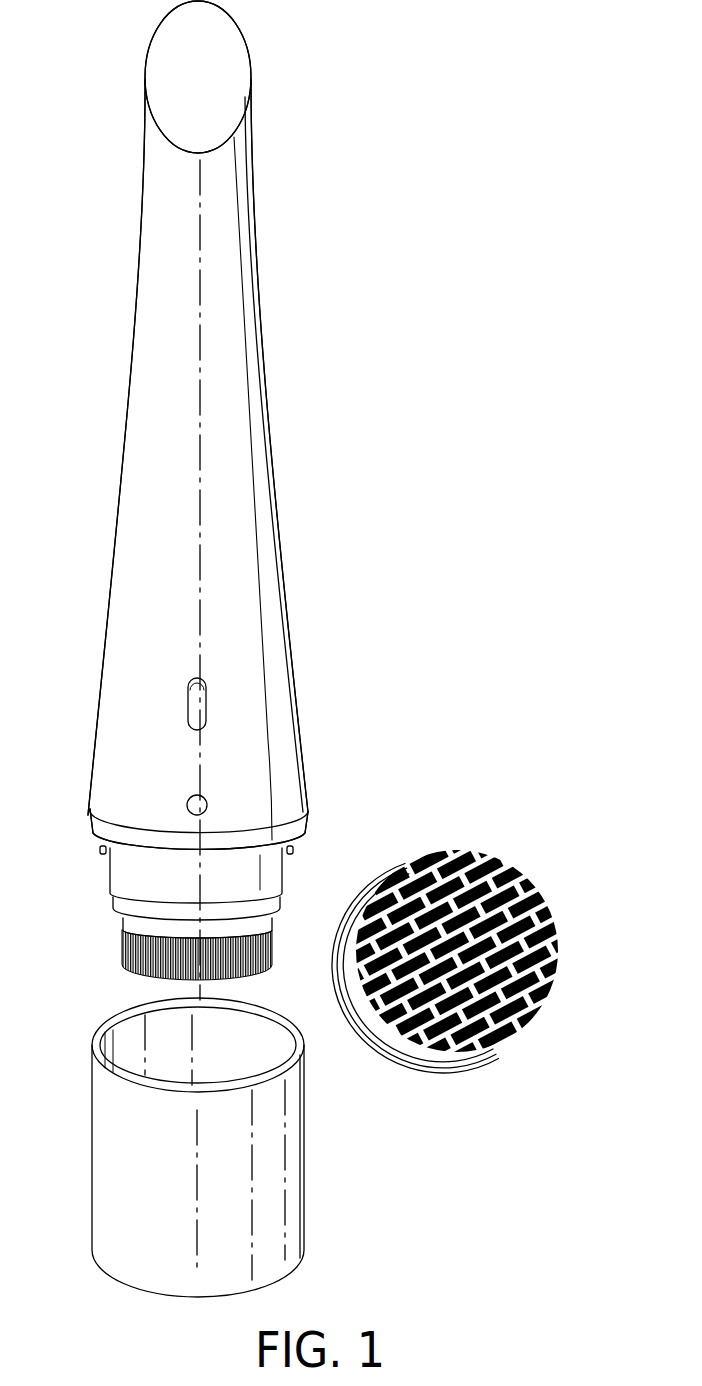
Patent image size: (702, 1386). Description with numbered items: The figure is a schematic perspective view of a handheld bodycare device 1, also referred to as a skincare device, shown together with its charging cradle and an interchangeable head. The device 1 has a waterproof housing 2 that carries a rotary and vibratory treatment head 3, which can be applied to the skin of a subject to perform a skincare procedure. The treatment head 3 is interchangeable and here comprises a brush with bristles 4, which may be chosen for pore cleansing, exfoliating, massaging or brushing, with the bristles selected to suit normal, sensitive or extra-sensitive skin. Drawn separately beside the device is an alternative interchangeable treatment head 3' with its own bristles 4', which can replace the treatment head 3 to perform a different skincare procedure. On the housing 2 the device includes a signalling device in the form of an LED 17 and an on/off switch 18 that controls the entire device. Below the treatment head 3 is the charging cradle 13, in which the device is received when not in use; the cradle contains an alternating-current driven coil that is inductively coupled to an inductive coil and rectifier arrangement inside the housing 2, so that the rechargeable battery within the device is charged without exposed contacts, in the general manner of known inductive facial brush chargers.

The handheld bodycare device 1 is at (294, 358).
The waterproof housing 2 is at (257, 445).
The treatment head 3 is at (180, 900).
The bristles 4 is at (179, 971).
The interchangeable treatment head 3' is at (415, 942).
The bristles 4' is at (472, 951).
The charging cradle 13 is at (305, 1153).
The LED 17 is at (187, 805).
The on/off switch 18 is at (188, 707).